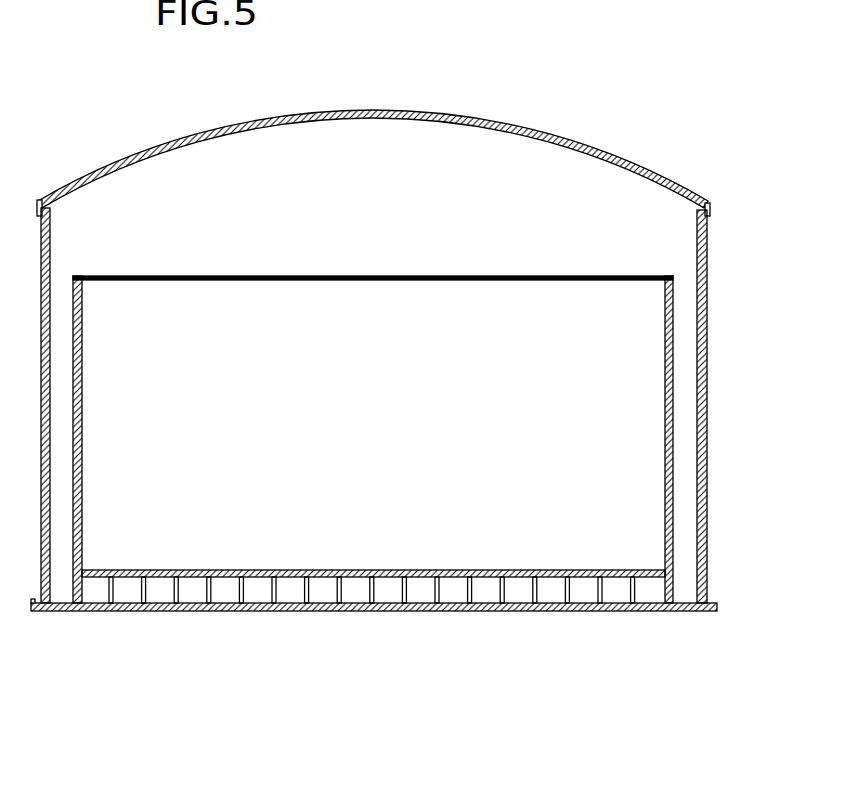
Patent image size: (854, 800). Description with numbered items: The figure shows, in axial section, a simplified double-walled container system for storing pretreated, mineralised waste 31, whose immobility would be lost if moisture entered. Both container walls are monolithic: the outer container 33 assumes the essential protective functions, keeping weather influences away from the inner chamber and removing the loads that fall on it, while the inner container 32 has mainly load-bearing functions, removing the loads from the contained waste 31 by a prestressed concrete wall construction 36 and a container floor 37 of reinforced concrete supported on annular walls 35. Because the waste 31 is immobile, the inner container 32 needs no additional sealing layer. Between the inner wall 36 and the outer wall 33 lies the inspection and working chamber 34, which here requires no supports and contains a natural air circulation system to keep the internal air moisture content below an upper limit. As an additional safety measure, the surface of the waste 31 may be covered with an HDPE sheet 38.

The waste 31 is at (653, 468).
The inner container 32 is at (420, 439).
The outer container 33 is at (708, 308).
The inspection and working chamber 34 is at (686, 381).
The annular walls 35 is at (505, 596).
The prestressed concrete wall construction 36 is at (667, 414).
The container floor 37 is at (513, 571).
The HDPE sheet 38 is at (445, 277).